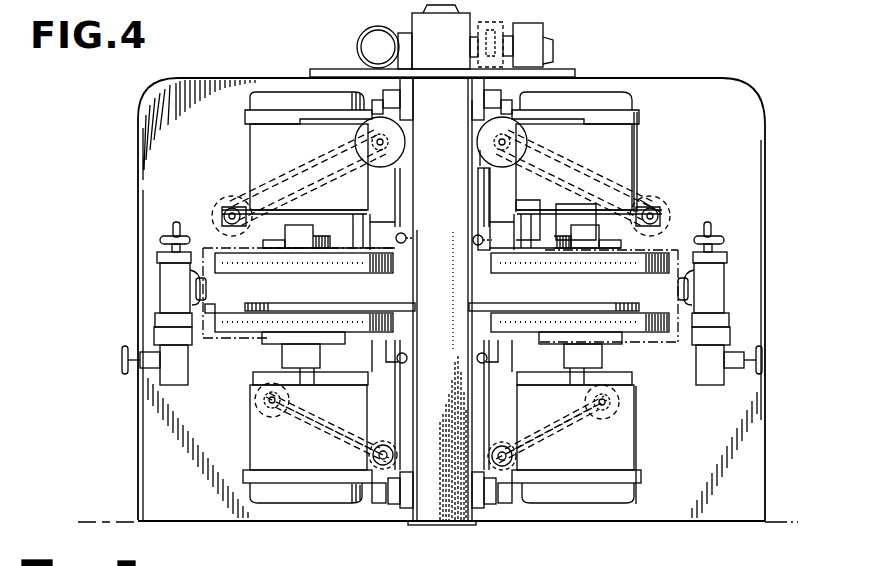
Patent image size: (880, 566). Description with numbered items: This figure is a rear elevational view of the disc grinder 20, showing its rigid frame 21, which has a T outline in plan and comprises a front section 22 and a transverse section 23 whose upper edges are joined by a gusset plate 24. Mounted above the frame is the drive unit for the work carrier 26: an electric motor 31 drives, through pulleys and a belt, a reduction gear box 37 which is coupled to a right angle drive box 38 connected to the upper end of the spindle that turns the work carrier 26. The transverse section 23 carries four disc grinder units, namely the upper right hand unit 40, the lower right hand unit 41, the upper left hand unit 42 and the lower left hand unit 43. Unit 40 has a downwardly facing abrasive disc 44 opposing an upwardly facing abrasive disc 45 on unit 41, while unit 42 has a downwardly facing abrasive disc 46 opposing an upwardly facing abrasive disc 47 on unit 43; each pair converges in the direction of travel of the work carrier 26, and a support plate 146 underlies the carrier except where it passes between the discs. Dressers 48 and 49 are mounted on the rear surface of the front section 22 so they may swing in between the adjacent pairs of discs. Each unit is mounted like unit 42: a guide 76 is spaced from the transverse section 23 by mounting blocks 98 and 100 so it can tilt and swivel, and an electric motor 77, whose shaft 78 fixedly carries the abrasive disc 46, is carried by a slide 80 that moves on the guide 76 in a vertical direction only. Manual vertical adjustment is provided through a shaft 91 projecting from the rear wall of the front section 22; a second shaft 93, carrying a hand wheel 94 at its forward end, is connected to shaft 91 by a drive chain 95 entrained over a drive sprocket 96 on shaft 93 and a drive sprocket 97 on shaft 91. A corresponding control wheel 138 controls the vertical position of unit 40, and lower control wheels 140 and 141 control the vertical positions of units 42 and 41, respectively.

The disc grinder 20 is at (727, 67).
The rigid frame 21 is at (748, 136).
The front section 22 is at (150, 205).
The transverse section 23 is at (452, 505).
The gusset plate 24 is at (575, 70).
The work carrier 26 is at (374, 304).
The electric motor 31 is at (370, 40).
The reduction gear box 37 is at (537, 33).
The right angle drive box 38 is at (418, 22).
The disc grinder unit 40 is at (262, 163).
The disc grinder unit 41 is at (262, 447).
The disc grinder unit 42 is at (644, 160).
The disc grinder unit 43 is at (620, 442).
The abrasive disc 44 is at (238, 272).
The abrasive disc 45 is at (232, 336).
The abrasive disc 46 is at (552, 272).
The abrasive disc 47 is at (640, 318).
The dresser 48 is at (156, 292).
The dresser 49 is at (716, 293).
The guide 76 is at (490, 193).
The electric motor 77 is at (630, 137).
The shaft 78 is at (580, 226).
The slide 80 is at (526, 212).
The shaft 91 is at (470, 158).
The shaft 93 is at (659, 213).
The hand wheel 94 is at (668, 223).
The drive chain 95 is at (634, 196).
The drive sprocket 96 is at (652, 202).
The drive sprocket 97 is at (520, 143).
The mounting block 98 is at (474, 243).
The mounting block 100 is at (477, 116).
The control wheel 138 is at (222, 204).
The control wheel 140 is at (619, 402).
The control wheel 141 is at (255, 402).
The support plate 146 is at (210, 314).